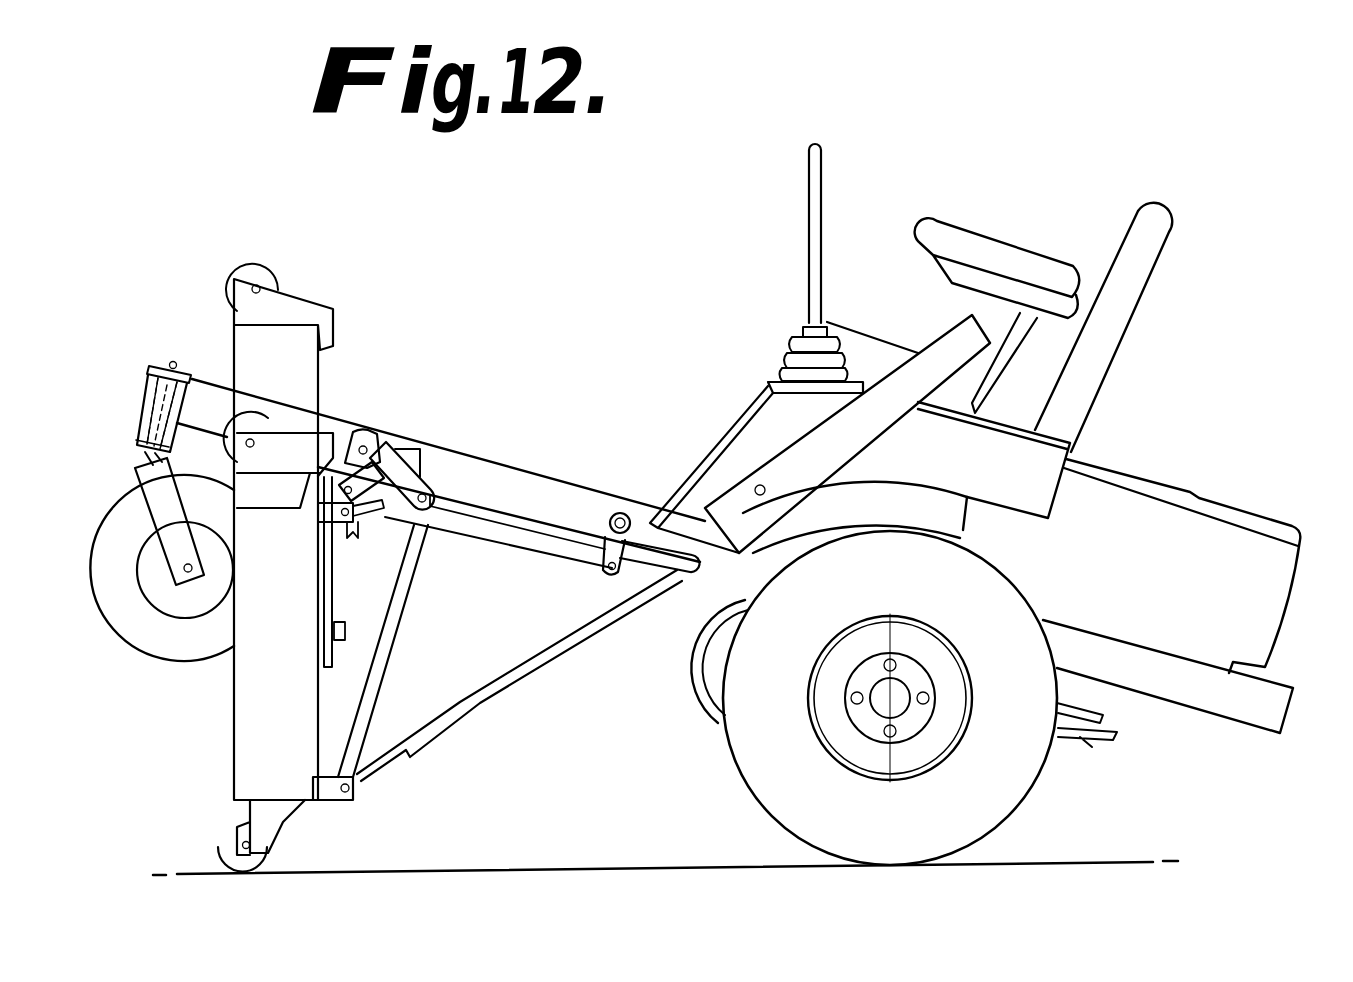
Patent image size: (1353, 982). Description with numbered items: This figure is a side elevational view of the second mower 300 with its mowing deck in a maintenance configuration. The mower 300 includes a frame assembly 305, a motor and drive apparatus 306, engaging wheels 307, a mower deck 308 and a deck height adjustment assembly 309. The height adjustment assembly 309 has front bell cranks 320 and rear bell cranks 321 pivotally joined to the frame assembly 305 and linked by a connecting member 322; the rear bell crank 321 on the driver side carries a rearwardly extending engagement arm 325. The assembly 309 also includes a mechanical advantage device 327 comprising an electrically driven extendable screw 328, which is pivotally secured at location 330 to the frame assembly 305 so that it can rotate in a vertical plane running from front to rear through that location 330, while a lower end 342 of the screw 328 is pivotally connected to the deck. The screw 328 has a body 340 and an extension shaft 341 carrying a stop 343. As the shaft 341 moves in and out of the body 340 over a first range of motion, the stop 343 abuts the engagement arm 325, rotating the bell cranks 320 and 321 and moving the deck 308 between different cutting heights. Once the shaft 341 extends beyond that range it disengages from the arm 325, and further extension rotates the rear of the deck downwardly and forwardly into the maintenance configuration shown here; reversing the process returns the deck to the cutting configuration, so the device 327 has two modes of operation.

The mower 300 is at (447, 240).
The frame assembly 305 is at (1137, 648).
The motor and drive apparatus 306 is at (707, 709).
The engaging wheels 307 is at (172, 662).
The mower deck 308 is at (233, 778).
The deck height adjustment assembly 309 is at (513, 540).
The front bell cranks 320 is at (388, 458).
The rear bell cranks 321 is at (608, 515).
The connecting member 322 is at (453, 525).
The engagement arm 325 is at (676, 571).
The mechanical advantage device 327 is at (893, 410).
The electrically driven extendable screw 328 is at (466, 708).
The location 330 is at (760, 484).
The body 340 is at (961, 328).
The extension shaft 341 is at (577, 624).
The lower end 342 is at (360, 792).
The stop 343 is at (370, 770).